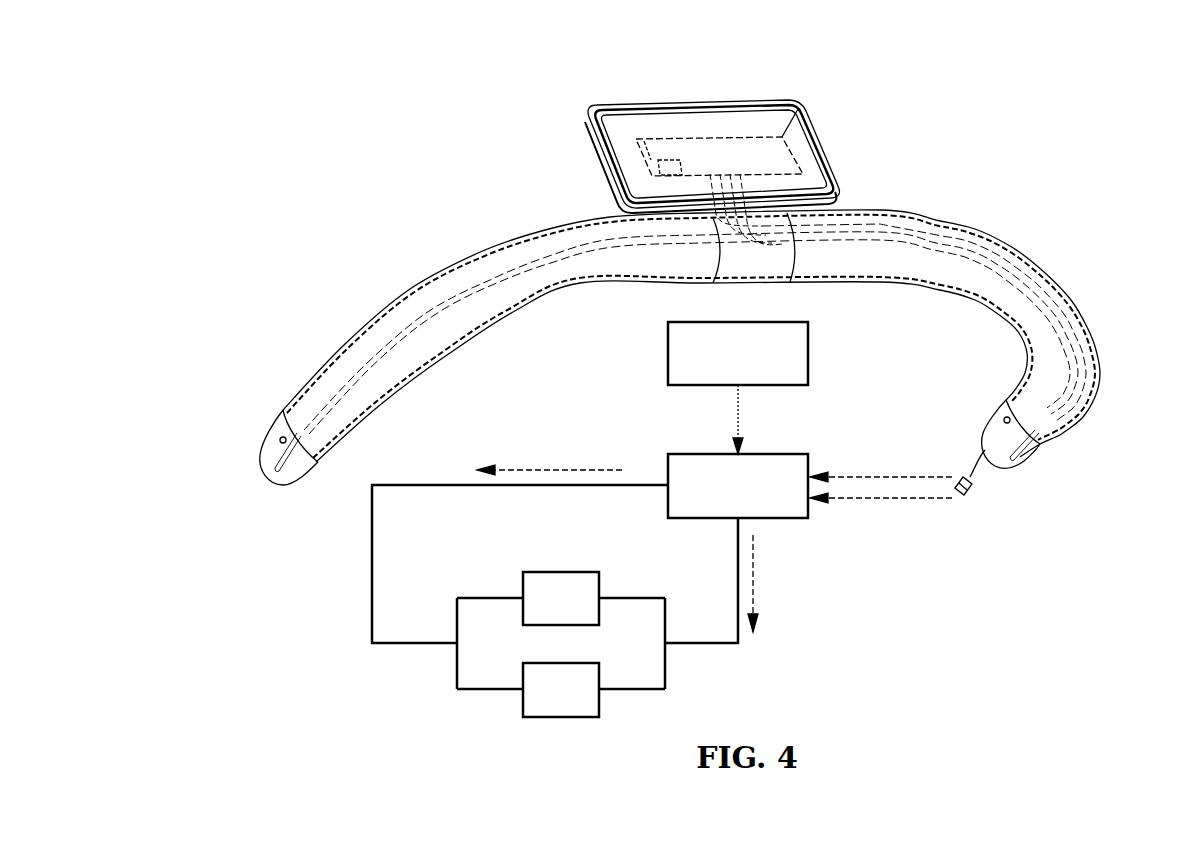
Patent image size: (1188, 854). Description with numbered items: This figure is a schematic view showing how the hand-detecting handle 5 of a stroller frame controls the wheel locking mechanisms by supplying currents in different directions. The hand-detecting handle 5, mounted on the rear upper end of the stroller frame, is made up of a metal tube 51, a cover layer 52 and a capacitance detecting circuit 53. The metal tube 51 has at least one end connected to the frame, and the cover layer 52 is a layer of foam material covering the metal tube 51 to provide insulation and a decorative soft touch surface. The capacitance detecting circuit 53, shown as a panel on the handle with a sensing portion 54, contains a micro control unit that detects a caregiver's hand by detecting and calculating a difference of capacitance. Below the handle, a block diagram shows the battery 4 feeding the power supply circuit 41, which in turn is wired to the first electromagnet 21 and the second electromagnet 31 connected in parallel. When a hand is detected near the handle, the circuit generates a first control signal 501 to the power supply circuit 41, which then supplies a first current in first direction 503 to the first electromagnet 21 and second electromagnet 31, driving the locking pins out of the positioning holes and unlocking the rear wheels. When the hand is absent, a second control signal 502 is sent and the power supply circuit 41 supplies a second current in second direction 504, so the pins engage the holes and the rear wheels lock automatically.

The hand-detecting handle 5 is at (669, 264).
The metal tube 51 is at (273, 453).
The cover layer 52 is at (353, 350).
The capacitance detecting circuit 53 is at (712, 123).
The touch sensor 54 is at (659, 162).
The battery 4 is at (731, 365).
The power supply circuit 41 is at (726, 498).
The first electromagnet 21 is at (549, 610).
The second electromagnet 31 is at (549, 701).
The first control signal 501 is at (893, 475).
The second control signal 502 is at (893, 500).
The first current in first direction 503 is at (570, 470).
The second current in second direction 504 is at (753, 578).